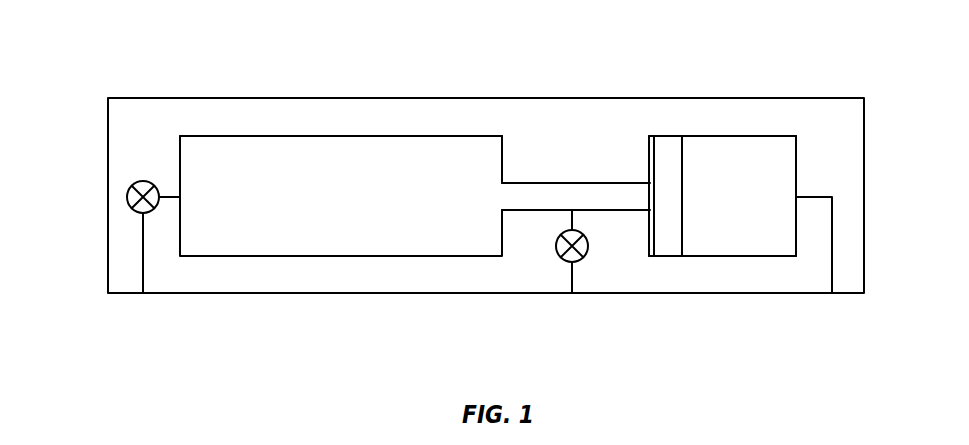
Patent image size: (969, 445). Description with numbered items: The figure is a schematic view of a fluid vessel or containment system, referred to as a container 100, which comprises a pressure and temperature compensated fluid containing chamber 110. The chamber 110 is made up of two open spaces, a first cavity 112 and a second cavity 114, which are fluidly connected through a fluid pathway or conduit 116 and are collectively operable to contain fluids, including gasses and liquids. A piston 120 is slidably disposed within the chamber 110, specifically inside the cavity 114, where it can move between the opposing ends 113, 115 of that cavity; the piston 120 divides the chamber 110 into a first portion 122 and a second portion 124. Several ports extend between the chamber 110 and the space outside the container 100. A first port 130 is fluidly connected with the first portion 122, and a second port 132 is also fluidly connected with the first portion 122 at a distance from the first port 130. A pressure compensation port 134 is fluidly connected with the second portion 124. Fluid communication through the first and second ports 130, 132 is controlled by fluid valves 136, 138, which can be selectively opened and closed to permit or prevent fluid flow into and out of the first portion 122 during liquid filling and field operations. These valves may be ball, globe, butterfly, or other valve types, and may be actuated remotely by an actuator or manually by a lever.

The container 100 is at (148, 66).
The chamber 110 is at (458, 206).
The cavity 112 is at (338, 134).
The end of the cavity 113 is at (648, 163).
The cavity 114 is at (728, 135).
The end of the cavity 115 is at (797, 162).
The conduit 116 is at (585, 182).
The piston 120 is at (667, 160).
The first portion 122 is at (338, 232).
The second portion 124 is at (732, 230).
The first port 130 is at (144, 273).
The second port 132 is at (573, 277).
The pressure compensation port 134 is at (832, 268).
The fluid valve 136 is at (131, 188).
The fluid valve 138 is at (555, 246).